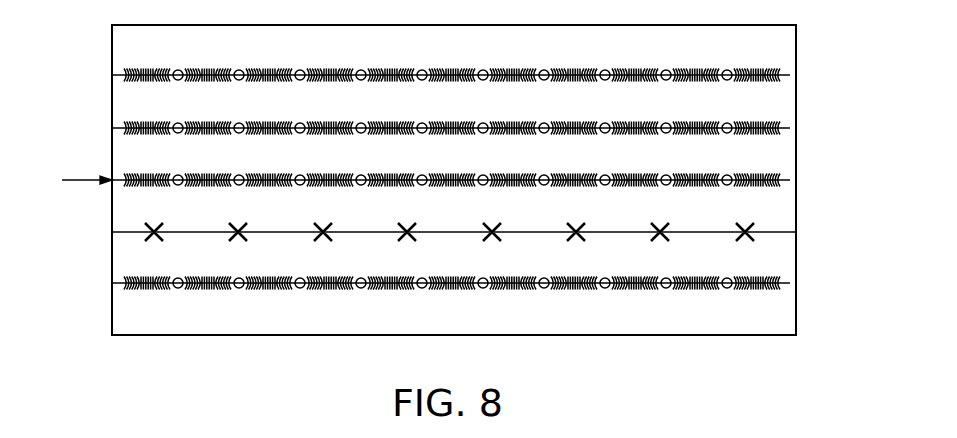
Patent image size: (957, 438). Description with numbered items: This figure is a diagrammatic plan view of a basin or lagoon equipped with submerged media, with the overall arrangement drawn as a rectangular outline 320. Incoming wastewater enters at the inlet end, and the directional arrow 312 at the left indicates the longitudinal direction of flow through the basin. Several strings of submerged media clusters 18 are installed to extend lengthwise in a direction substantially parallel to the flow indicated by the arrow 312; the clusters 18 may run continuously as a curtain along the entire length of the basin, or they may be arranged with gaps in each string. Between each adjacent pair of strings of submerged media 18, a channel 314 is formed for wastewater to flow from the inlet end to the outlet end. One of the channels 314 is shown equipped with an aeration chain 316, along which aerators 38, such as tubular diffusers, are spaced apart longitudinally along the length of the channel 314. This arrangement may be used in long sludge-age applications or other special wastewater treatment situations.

The fabric panel 320 is at (797, 50).
The channel 314 is at (487, 221).
The submerged media clusters 18 is at (452, 82).
The aeration chain 316 is at (624, 233).
The aerators 38 is at (326, 241).
The directional arrows 312 is at (70, 181).